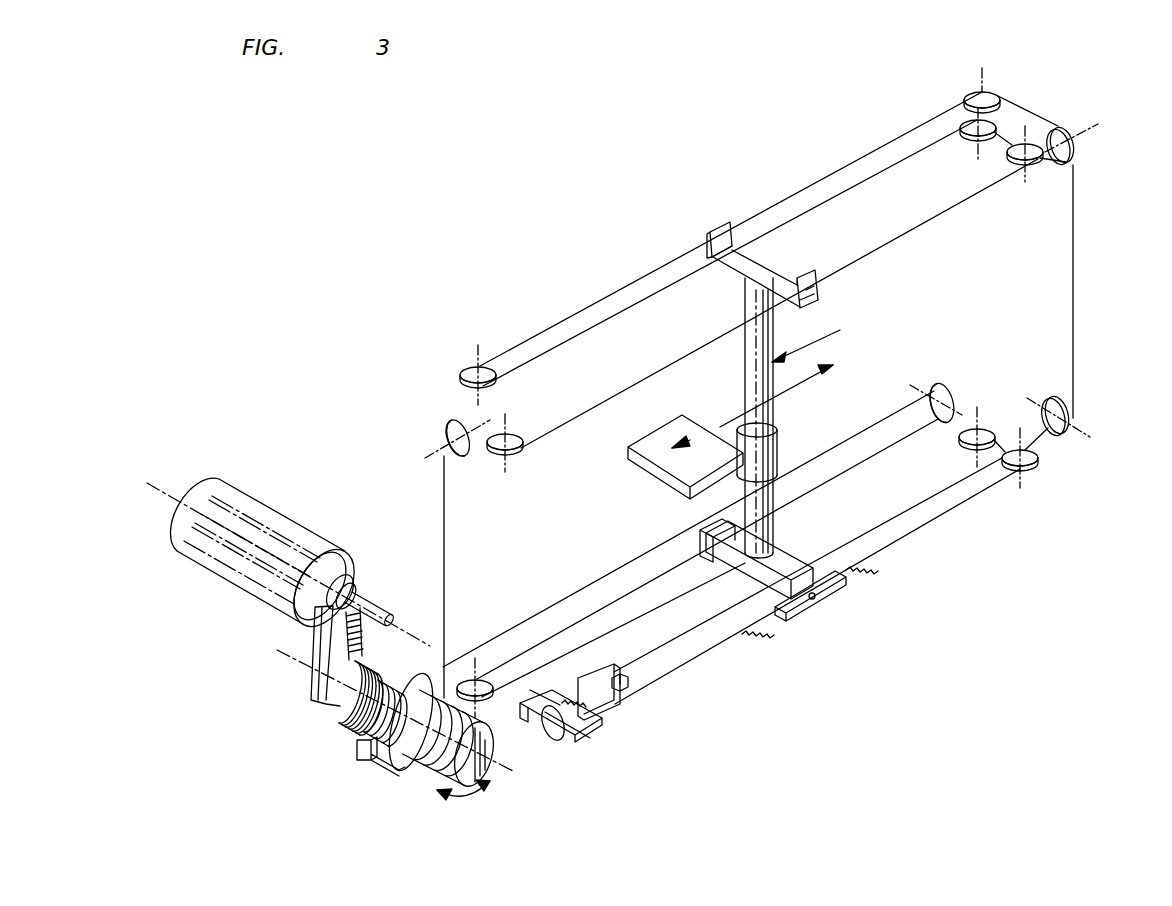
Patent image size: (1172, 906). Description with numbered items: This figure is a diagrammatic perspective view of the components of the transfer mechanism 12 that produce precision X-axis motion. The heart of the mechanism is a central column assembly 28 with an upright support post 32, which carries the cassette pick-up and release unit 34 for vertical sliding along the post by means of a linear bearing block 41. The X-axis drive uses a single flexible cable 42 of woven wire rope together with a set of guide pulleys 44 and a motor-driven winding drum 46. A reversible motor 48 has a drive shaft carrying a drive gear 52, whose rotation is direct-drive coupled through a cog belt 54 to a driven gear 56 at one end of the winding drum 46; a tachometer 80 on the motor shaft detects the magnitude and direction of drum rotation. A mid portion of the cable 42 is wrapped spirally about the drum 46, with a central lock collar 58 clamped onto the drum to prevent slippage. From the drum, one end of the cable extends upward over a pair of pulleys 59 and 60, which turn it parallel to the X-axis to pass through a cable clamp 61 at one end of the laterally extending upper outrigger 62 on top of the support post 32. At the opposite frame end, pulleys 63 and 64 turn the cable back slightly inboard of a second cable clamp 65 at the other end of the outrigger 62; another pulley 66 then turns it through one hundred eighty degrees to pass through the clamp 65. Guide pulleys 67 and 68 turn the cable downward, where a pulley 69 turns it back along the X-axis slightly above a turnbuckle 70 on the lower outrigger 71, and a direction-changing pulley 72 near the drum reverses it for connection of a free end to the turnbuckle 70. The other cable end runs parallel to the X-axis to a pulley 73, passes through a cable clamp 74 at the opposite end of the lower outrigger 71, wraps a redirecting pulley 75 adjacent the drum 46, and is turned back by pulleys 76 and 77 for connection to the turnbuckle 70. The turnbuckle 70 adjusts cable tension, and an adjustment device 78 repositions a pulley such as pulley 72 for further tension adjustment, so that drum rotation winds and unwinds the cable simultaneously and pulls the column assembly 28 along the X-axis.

The transfer mechanism 12 is at (945, 583).
The central column assembly 28 is at (832, 332).
The upright support post 32 is at (740, 384).
The cassette pick-up and release unit 34 is at (658, 473).
The linear bearing block 41 is at (776, 448).
The flexible cable 42 is at (598, 581).
The set of guide pulleys 44 is at (458, 312).
The winding drum 46 is at (480, 784).
The reversible motor 48 is at (285, 527).
The drive gear 52 is at (362, 598).
The cog belt 54 is at (318, 688).
The driven gear 56 is at (335, 715).
The central lock collar 58 is at (370, 770).
The pulley 59 is at (448, 434).
The pulley 60 is at (512, 437).
The cable clamp 61 is at (810, 278).
The upper outrigger 62 is at (773, 280).
The pulley 63 is at (1015, 162).
The pulley 64 is at (963, 134).
The second cable clamp 65 is at (720, 228).
The pulley 66 is at (486, 367).
The guide pulley 67 is at (995, 102).
The guide pulley 68 is at (1072, 160).
The pulley 69 is at (1072, 420).
The turnbuckle 70 is at (830, 600).
The lower outrigger 71 is at (782, 562).
The direction-changing pulley 72 is at (548, 745).
The pulley 73 is at (955, 403).
The cable clamp 74 is at (700, 543).
The redirecting pulley 75 is at (477, 680).
The pulley 76 is at (964, 445).
The pulley 77 is at (1035, 462).
The adjustment device 78 is at (622, 682).
The tachometer 80 is at (380, 616).